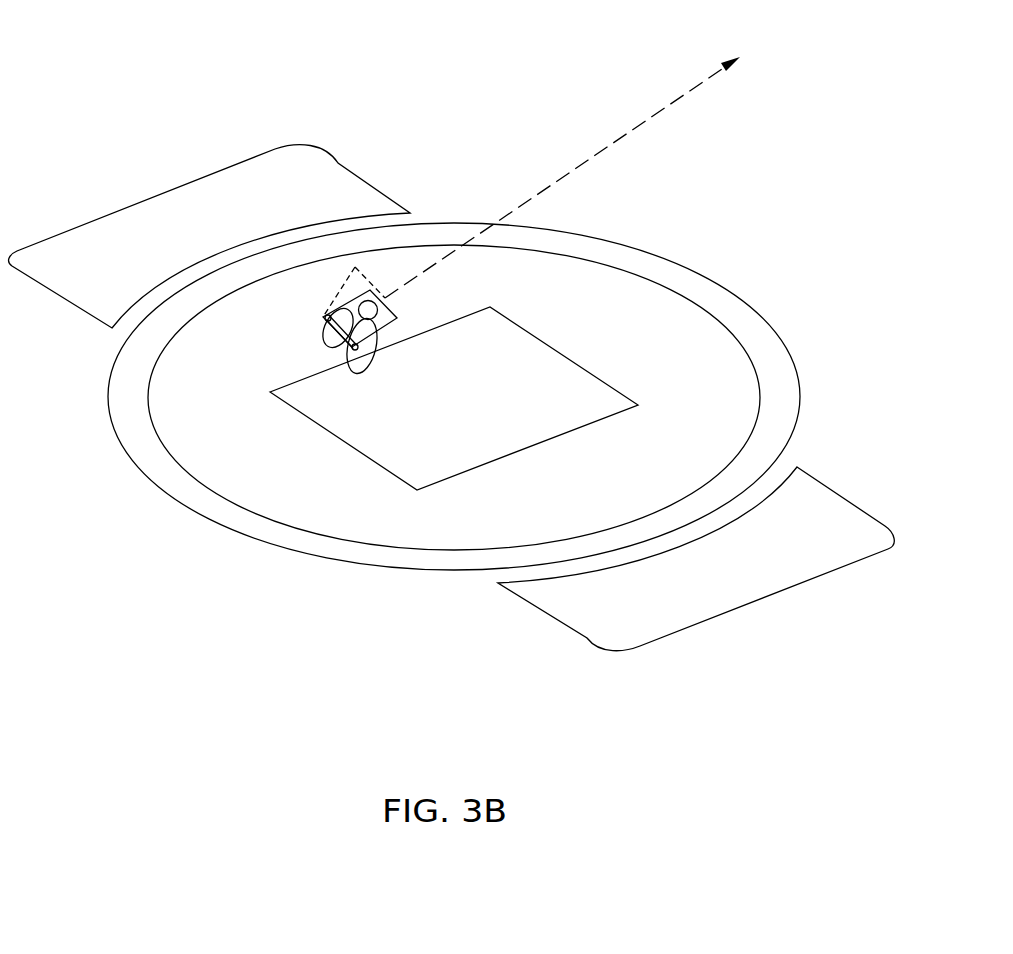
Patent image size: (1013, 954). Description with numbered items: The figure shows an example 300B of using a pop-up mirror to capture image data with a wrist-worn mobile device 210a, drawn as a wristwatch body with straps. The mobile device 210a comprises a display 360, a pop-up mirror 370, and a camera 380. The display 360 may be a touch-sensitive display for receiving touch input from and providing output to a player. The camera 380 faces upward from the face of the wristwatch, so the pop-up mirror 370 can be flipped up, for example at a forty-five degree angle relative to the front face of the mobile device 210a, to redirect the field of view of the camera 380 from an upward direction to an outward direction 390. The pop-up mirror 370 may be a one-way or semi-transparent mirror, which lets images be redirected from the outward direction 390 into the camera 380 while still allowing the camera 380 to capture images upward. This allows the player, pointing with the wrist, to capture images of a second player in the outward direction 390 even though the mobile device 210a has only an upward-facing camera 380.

The example of using a pop-up mirror in capturing image data 300B is at (164, 53).
The mobile device 210a is at (735, 297).
The display 360 is at (518, 448).
The pop-up mirror 370 is at (400, 318).
The camera 380 is at (333, 346).
The outward direction 390 is at (625, 138).